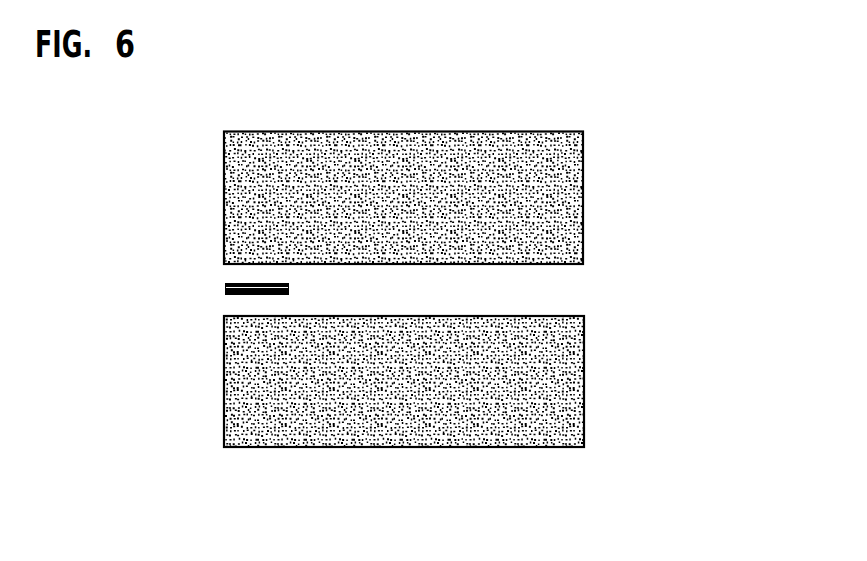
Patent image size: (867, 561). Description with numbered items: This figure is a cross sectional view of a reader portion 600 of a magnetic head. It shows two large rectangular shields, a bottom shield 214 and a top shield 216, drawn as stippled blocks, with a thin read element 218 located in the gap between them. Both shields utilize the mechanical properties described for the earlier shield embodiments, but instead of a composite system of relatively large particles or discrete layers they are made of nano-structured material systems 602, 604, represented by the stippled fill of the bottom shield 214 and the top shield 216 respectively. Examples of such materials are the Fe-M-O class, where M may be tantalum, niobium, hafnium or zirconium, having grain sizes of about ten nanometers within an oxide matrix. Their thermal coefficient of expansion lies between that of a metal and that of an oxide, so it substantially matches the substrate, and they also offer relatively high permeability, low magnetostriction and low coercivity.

The reader portion 600 is at (278, 105).
The nano-structured material system 604 is at (475, 152).
The top shield 216 is at (596, 207).
The read element 218 is at (225, 289).
The bottom shield 214 is at (597, 390).
The nano-structured material system 602 is at (490, 432).